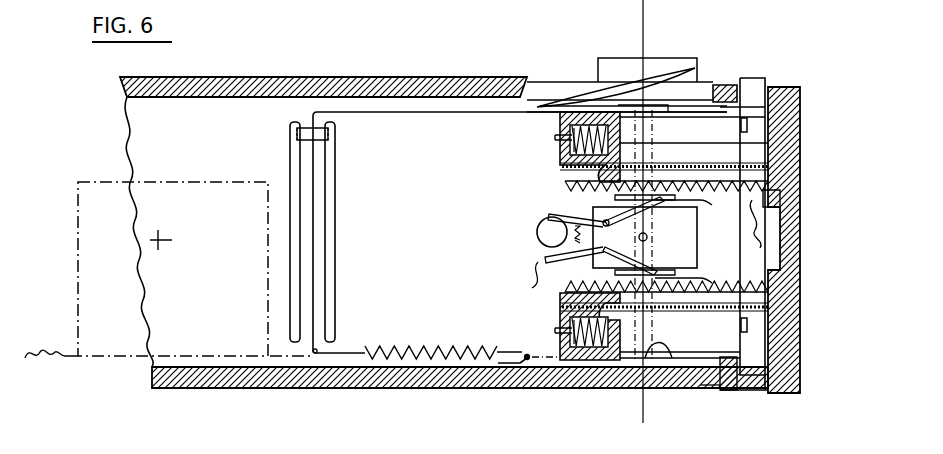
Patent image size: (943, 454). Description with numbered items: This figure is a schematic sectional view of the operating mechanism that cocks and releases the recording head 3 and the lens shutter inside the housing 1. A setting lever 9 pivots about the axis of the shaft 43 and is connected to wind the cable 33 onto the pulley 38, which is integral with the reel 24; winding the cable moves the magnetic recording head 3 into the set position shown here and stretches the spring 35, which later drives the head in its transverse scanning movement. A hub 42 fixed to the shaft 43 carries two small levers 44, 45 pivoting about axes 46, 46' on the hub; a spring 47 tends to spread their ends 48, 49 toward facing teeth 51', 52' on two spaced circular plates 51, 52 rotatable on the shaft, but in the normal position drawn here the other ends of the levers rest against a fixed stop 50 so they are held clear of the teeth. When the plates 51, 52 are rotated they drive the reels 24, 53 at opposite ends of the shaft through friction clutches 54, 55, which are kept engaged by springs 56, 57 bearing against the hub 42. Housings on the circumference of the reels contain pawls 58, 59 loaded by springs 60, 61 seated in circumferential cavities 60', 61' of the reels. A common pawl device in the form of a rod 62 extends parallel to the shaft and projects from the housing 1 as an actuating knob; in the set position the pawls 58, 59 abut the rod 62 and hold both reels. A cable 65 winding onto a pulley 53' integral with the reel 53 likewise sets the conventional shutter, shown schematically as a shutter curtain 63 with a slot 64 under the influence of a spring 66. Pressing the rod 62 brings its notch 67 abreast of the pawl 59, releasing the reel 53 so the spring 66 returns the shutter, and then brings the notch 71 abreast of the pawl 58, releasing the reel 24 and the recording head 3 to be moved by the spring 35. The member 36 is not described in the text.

The housing 1 is at (448, 390).
The recording head 3 is at (318, 142).
The setting lever 9 is at (638, 72).
The reel 24 is at (725, 143).
The cable 33 is at (398, 113).
The spring 35 is at (395, 345).
The rod 36 is at (517, 370).
The pulley 38 is at (688, 120).
The hub 42 is at (698, 240).
The shaft 43 is at (660, 375).
The lever 44 is at (556, 216).
The lever 45 is at (545, 262).
The axis 46 is at (581, 215).
The axis 46' is at (574, 261).
The spring 47 is at (545, 270).
The lever end 48 is at (652, 208).
The lever end 49 is at (655, 265).
The fixed stop 50 is at (537, 236).
The circular plate 51 is at (700, 185).
The teeth 51' is at (806, 211).
The circular plate 52 is at (700, 295).
The teeth 52' is at (806, 263).
The reel 53 is at (777, 367).
The pulley 53' is at (734, 404).
The friction clutch 54 is at (720, 167).
The friction clutch 55 is at (720, 311).
The spring 56 is at (712, 205).
The spring 57 is at (712, 283).
The pawl 58 is at (555, 138).
The pawl 59 is at (556, 330).
The spring 60 is at (576, 107).
The circumferential cavity 60' is at (590, 79).
The spring 61 is at (586, 359).
The circumferential cavity 61' is at (605, 372).
The rod 62 is at (750, 85).
The shutter curtain 63 is at (156, 184).
The slot 64 is at (166, 240).
The cable 65 is at (293, 357).
The spring 66 is at (45, 364).
The notch 67 is at (748, 325).
The notch 71 is at (748, 125).